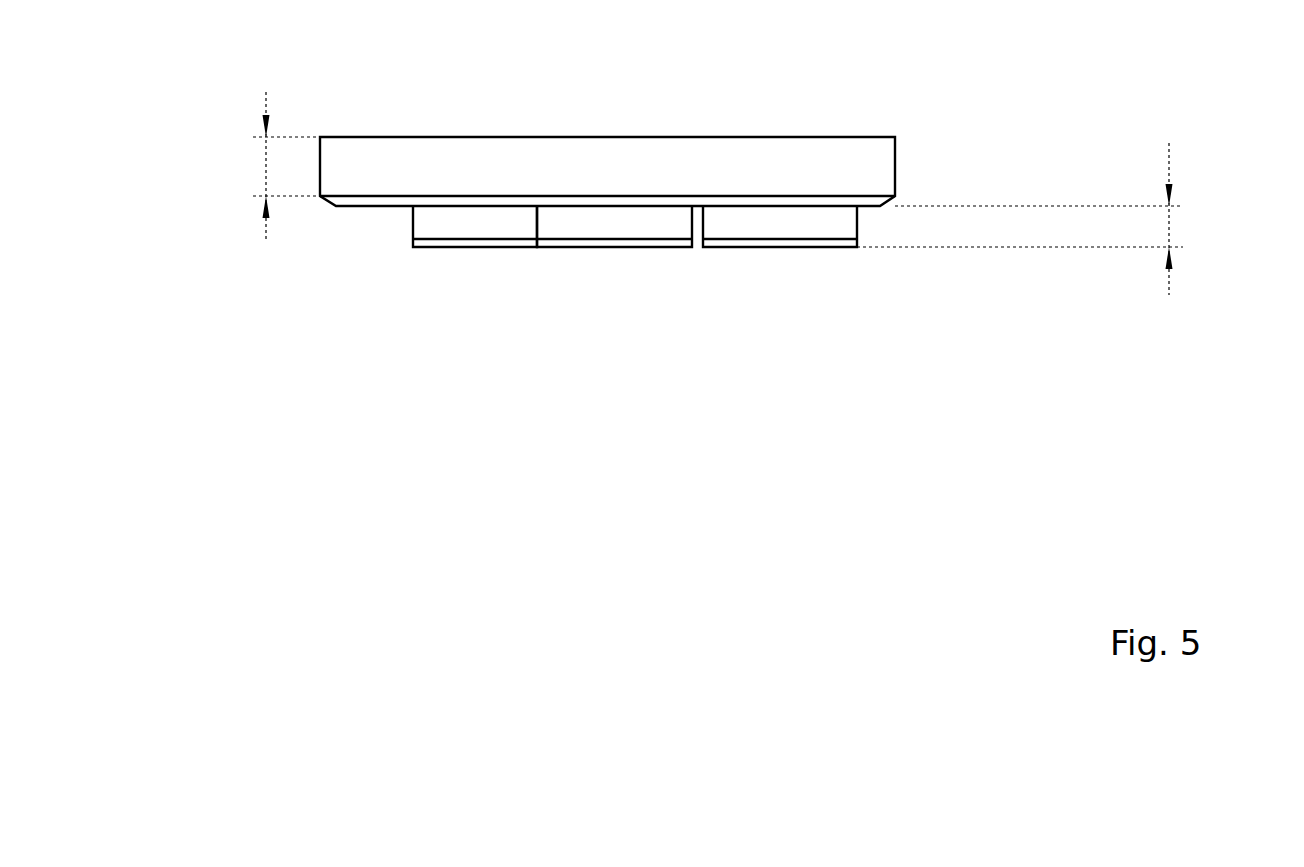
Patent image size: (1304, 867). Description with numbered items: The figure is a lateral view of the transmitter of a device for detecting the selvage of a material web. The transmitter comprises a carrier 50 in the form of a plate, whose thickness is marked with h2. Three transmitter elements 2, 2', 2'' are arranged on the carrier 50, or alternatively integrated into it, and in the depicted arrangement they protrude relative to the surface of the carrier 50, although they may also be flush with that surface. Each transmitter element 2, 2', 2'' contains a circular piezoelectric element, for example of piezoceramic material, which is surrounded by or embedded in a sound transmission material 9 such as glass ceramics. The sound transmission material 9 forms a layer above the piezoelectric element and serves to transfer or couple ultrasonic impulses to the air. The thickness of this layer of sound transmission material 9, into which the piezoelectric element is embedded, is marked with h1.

The carrier 50 is at (549, 162).
The transmitter element 2 is at (475, 293).
The transmitter element 2' is at (614, 293).
The transmitter element 2'' is at (780, 293).
The sound transmission material 9 is at (455, 232).
The thickness of the sound transmission material h1 is at (1038, 219).
The thickness of the carrier h2 is at (271, 167).